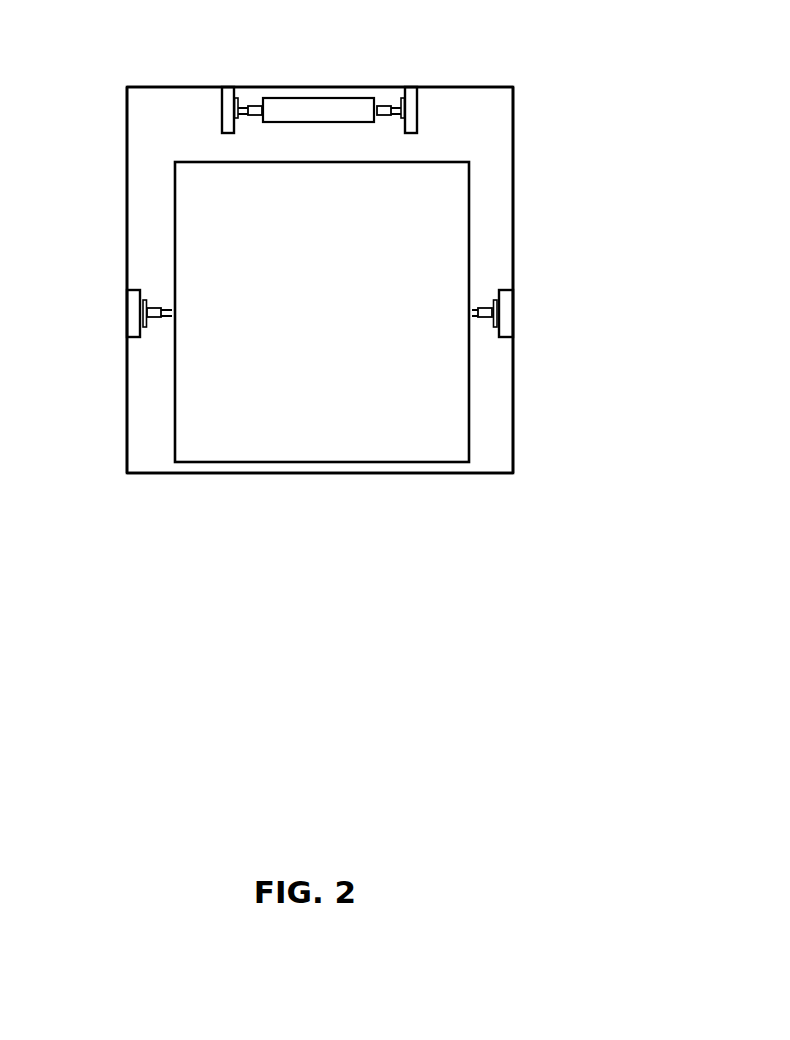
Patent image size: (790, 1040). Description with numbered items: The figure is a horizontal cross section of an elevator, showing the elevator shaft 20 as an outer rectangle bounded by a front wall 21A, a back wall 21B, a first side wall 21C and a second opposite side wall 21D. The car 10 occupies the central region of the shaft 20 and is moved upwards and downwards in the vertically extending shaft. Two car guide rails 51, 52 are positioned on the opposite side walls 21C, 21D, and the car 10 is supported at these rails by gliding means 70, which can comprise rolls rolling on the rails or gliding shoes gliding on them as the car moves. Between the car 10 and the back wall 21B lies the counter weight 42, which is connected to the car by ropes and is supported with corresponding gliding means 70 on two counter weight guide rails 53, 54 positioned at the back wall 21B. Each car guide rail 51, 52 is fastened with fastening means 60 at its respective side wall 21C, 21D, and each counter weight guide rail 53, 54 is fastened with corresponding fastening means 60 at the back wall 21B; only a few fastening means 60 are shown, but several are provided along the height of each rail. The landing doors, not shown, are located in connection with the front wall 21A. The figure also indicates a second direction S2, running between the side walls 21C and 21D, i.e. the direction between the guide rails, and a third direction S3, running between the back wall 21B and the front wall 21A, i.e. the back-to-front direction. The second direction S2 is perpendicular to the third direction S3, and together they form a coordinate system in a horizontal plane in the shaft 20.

The car 10 is at (336, 307).
The elevator shaft 20 is at (497, 220).
The front wall 21A is at (325, 476).
The back wall 21B is at (478, 86).
The first side wall 21C is at (126, 150).
The second opposite side wall 21D is at (514, 137).
The counter weight 42 is at (325, 112).
The car guide rail 51 is at (148, 322).
The car guide rail 52 is at (488, 323).
The counter weight guide rail 53 is at (237, 97).
The counter weight guide rail 54 is at (402, 97).
The fastening means 60 is at (227, 109).
The gliding means 70 is at (250, 105).
The second direction S2 is at (295, 667).
The third direction S3 is at (643, 231).